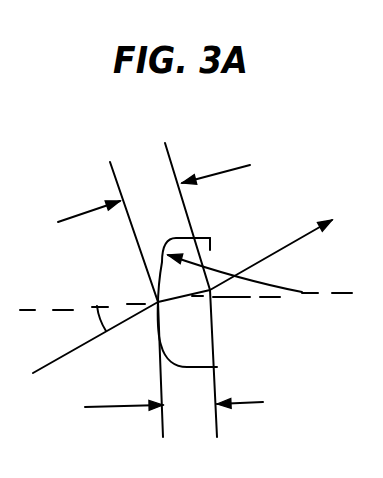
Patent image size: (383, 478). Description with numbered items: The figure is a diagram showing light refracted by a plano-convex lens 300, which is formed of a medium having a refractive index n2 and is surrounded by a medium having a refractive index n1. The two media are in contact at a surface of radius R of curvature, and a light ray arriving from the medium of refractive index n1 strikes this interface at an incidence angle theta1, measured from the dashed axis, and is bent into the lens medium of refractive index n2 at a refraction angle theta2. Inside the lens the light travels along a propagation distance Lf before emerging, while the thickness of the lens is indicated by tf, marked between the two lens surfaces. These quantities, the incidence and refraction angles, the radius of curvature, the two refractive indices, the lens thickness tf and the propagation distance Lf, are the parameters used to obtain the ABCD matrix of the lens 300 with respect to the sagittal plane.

The lens 300 is at (202, 238).
The incidence angle theta1 is at (121, 331).
The refraction angle theta2 is at (218, 295).
The radius of curvature R is at (271, 255).
The refractive index of the incident medium n1 is at (119, 364).
The refractive index of the lens medium n2 is at (186, 322).
The propagation distance in the lens Lf is at (154, 185).
The thickness of the lens tf is at (174, 419).